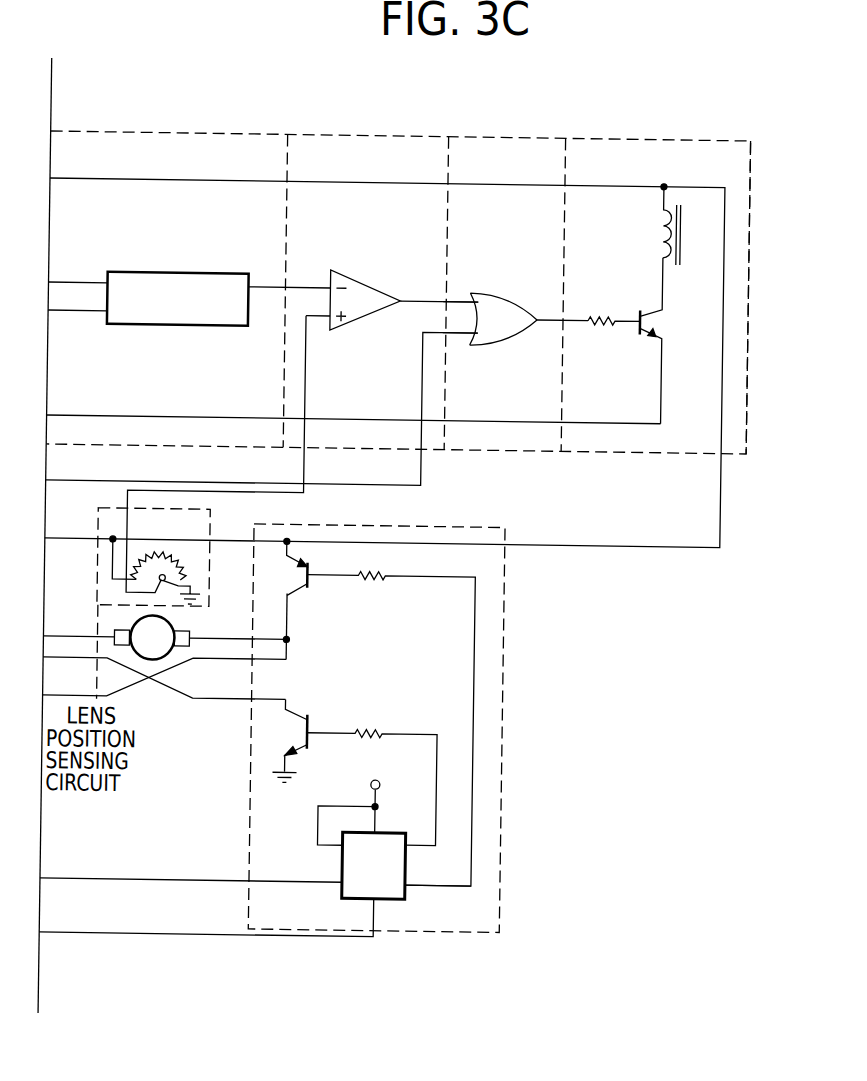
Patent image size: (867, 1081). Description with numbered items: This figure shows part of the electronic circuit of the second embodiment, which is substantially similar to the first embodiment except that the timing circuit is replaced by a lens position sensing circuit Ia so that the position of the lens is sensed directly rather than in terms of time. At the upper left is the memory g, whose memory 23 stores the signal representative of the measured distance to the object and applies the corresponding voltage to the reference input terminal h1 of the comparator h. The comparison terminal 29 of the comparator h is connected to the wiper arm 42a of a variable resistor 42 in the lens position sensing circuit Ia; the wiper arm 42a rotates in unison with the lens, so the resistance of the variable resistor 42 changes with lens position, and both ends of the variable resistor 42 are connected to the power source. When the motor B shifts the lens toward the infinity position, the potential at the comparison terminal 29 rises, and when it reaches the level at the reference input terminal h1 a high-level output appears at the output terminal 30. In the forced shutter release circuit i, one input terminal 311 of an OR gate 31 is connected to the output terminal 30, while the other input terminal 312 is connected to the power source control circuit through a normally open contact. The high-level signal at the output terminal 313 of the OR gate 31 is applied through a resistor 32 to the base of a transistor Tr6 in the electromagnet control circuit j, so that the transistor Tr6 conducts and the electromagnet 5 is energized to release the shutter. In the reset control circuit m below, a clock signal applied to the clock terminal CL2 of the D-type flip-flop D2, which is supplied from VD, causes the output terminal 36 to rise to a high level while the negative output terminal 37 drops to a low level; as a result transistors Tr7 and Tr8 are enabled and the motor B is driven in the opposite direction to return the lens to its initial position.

The electromagnet 5 is at (660, 234).
The memory 23 is at (204, 271).
The comparison terminal 29 is at (322, 316).
The output terminal 30 is at (418, 296).
The OR gate 31 is at (516, 300).
The input terminal 311 is at (463, 296).
The input terminal 312 is at (463, 330).
The output terminal 313 is at (546, 315).
The resistor 32 is at (602, 318).
The output terminal 36 is at (418, 842).
The negative output terminal 37 is at (418, 882).
The variable resistor 42 is at (169, 545).
The wiper arm 42a is at (218, 561).
The motor B is at (181, 626).
The clock terminal CL2 is at (288, 878).
The D-type flip-flop D2 is at (403, 828).
The supply voltage VD is at (353, 798).
The transistor Tr6 is at (656, 311).
The transistor Tr7 is at (303, 588).
The transistor Tr8 is at (300, 712).
The lens position sensing circuit Ia is at (103, 508).
The memory g is at (68, 132).
The comparator h is at (292, 132).
The reference input terminal h1 is at (304, 284).
The forced shutter release circuit i is at (453, 136).
The electromagnet control circuit j is at (578, 136).
The reset control circuit m is at (509, 521).